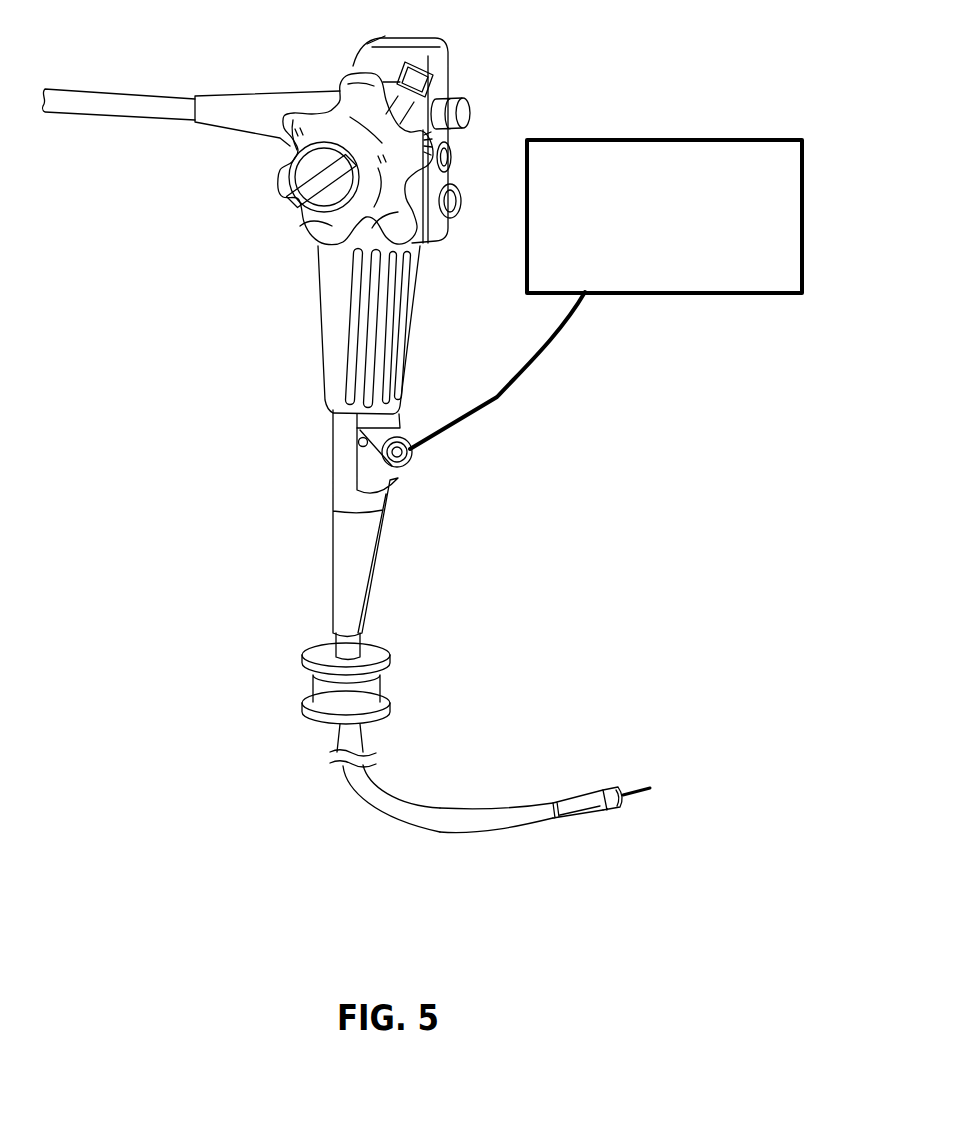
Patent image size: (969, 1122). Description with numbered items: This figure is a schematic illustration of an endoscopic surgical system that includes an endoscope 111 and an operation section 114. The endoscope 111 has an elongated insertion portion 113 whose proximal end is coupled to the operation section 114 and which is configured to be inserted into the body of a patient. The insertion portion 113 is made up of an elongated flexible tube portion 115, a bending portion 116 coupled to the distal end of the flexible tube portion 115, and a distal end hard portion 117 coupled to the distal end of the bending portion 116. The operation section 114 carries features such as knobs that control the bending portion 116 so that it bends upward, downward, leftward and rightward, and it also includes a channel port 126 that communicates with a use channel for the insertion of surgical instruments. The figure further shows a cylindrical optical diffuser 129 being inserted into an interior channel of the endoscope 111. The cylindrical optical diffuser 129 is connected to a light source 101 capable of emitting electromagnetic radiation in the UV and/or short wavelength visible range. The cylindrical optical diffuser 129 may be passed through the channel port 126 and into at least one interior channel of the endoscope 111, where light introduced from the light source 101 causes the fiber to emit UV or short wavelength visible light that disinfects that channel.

The light source 101 is at (803, 199).
The endoscope 111 is at (276, 517).
The insertion portion 113 is at (463, 847).
The operation section 114 is at (306, 343).
The flexible tube portion 115 is at (363, 800).
The bending portion 116 is at (574, 820).
The distal end hard portion 117 is at (617, 812).
The channel port 126 is at (414, 468).
The cylindrical optical diffuser 129 is at (463, 403).